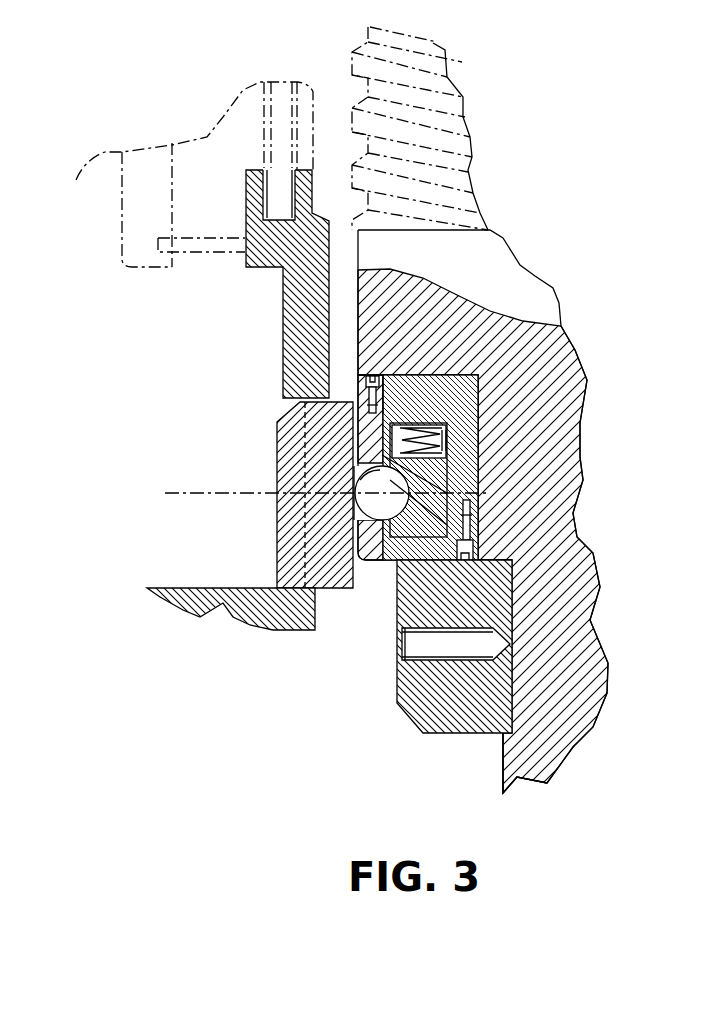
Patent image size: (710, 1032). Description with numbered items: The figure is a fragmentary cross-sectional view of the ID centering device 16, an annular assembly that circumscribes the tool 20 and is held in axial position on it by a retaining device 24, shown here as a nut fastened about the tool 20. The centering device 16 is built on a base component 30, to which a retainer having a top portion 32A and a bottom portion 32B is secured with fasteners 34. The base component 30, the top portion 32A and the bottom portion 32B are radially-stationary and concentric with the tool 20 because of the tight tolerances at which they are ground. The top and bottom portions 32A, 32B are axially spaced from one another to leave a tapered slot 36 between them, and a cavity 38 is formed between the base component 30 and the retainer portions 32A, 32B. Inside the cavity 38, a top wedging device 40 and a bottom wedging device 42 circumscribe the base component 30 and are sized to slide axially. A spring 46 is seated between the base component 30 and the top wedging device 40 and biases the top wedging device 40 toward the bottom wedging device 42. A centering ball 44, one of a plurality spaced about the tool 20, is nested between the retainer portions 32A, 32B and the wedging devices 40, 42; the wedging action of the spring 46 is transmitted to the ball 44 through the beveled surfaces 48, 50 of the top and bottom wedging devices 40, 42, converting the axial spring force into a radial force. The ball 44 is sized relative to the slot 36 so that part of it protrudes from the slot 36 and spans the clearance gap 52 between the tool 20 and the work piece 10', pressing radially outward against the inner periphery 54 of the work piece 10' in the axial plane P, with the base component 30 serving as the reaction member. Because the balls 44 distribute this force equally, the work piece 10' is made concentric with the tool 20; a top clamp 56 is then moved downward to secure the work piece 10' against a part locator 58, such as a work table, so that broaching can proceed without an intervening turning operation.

The work piece 10' is at (256, 495).
The ID centering device 16 is at (372, 576).
The tool 20 is at (520, 778).
The retaining device 24 is at (440, 700).
The base component 30 is at (545, 340).
The top portion of the retainer 32A is at (360, 447).
The bottom portion of the retainer 32B is at (378, 592).
The fasteners 34 is at (353, 393).
The tapered slot 36 is at (353, 480).
The cavity 38 is at (445, 440).
The top wedging device 40 is at (440, 465).
The bottom wedging device 42 is at (450, 492).
The centering ball 44 is at (362, 540).
The spring 46 is at (470, 430).
The beveled surface of the top wedging device 48 is at (383, 455).
The beveled surface of the bottom wedging device 50 is at (478, 548).
The clearance gap 52 is at (355, 590).
The inner periphery 54 is at (455, 562).
The top clamp 56 is at (297, 332).
The part locator 58 is at (222, 607).
The axial plane P is at (182, 493).